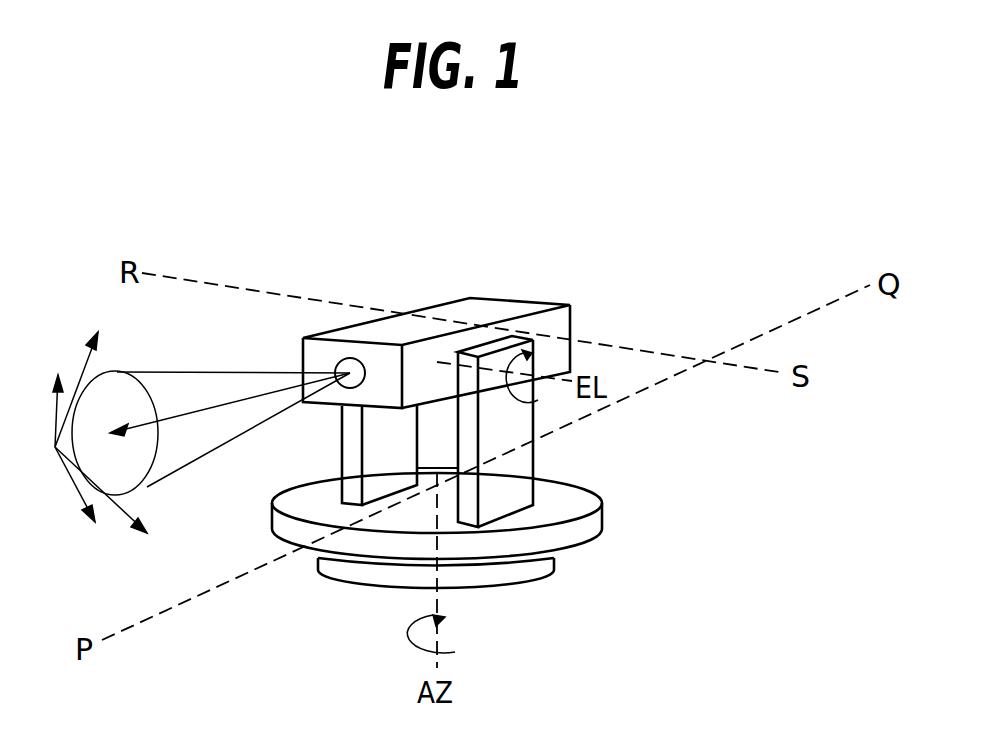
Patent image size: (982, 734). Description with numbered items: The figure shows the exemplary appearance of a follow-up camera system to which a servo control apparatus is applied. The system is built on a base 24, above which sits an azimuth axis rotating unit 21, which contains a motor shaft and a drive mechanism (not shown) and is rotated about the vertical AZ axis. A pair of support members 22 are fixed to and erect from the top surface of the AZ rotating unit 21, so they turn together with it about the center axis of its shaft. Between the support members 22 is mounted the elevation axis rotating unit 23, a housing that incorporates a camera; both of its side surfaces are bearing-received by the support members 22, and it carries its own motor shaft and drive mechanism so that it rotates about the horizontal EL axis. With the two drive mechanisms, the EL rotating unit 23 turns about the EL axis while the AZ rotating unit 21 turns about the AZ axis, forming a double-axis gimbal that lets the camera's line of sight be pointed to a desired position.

The azimuth axis rotating unit 21 is at (606, 522).
The pair of support members 22 is at (336, 437).
The elevation axis rotating unit 23 is at (470, 298).
The base 24 is at (533, 585).